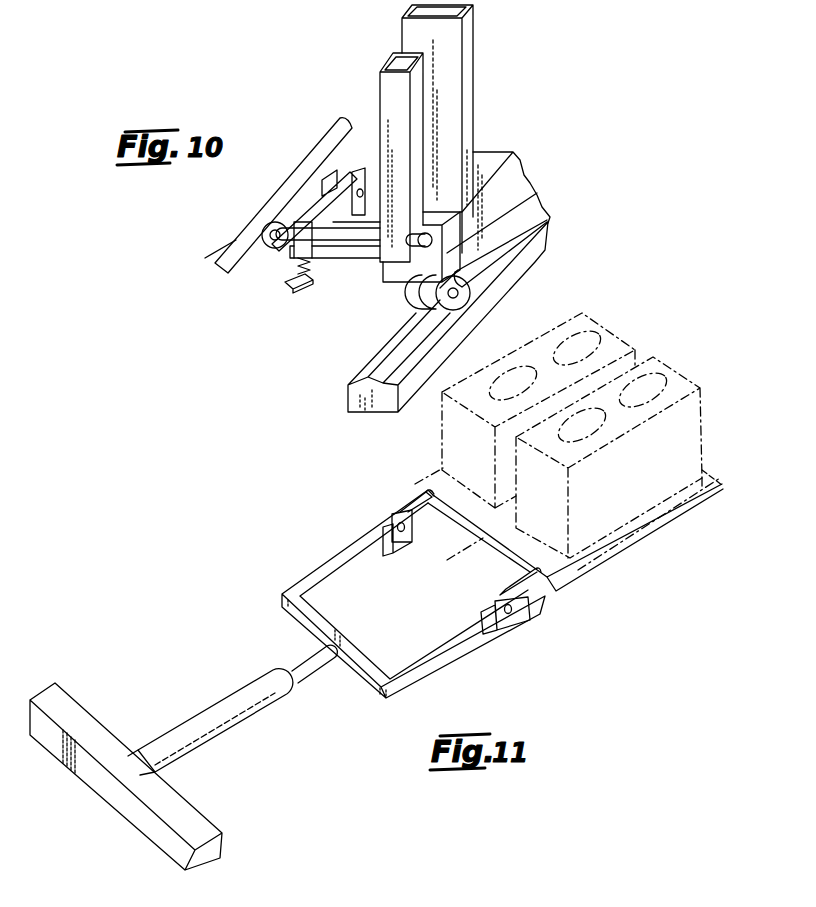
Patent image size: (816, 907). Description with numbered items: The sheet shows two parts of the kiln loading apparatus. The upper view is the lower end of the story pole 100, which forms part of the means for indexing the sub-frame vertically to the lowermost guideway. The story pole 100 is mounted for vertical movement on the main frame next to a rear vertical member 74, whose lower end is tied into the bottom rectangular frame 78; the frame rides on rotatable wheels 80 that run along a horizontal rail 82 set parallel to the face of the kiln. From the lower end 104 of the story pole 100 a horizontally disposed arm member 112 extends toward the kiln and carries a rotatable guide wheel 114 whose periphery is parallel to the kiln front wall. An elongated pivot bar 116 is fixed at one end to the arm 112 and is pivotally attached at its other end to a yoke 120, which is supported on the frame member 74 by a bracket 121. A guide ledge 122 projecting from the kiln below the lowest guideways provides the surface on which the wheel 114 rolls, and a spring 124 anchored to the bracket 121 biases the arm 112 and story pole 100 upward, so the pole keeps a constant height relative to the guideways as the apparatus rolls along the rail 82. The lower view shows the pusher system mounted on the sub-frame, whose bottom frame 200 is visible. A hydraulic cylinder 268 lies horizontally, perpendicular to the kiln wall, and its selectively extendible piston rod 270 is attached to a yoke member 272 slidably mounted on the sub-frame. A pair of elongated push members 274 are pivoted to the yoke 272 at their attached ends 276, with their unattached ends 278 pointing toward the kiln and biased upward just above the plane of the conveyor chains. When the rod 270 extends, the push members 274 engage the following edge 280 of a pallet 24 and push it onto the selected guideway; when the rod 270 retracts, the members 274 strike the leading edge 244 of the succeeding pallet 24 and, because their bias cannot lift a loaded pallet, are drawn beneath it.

In FIG. 10, the rear vertical member 74 is at (462, 72).
In FIG. 10, the bottom rectangular frame 78 is at (513, 178).
In FIG. 10, the rotatable wheel 80 is at (462, 297).
In FIG. 10, the rail 82 is at (437, 327).
In FIG. 10, the story pole 100 is at (386, 78).
In FIG. 10, the lower end 104 is at (400, 145).
In FIG. 10, the arm member 112 is at (338, 250).
In FIG. 10, the guide wheel 114 is at (268, 258).
In FIG. 10, the pivot bar 116 is at (313, 215).
In FIG. 10, the yoke 120 is at (355, 172).
In FIG. 10, the bracket 121 is at (370, 222).
In FIG. 10, the guide ledge 122 is at (205, 256).
In FIG. 10, the spring 124 is at (296, 279).
In FIG. 11, the pallet 24 is at (722, 482).
In FIG. 11, the leading edge 244 is at (703, 478).
In FIG. 11, the yoke member 272 is at (325, 568).
In FIG. 11, the push member 274 is at (415, 500).
In FIG. 11, the attached end 276 is at (385, 516).
In FIG. 11, the unattached end 278 is at (545, 600).
In FIG. 11, the following edge 280 is at (451, 561).
In FIG. 11, the piston rod 270 is at (312, 670).
In FIG. 11, the hydraulic cylinder 268 is at (228, 718).
In FIG. 11, the bottom frame 200 is at (180, 812).